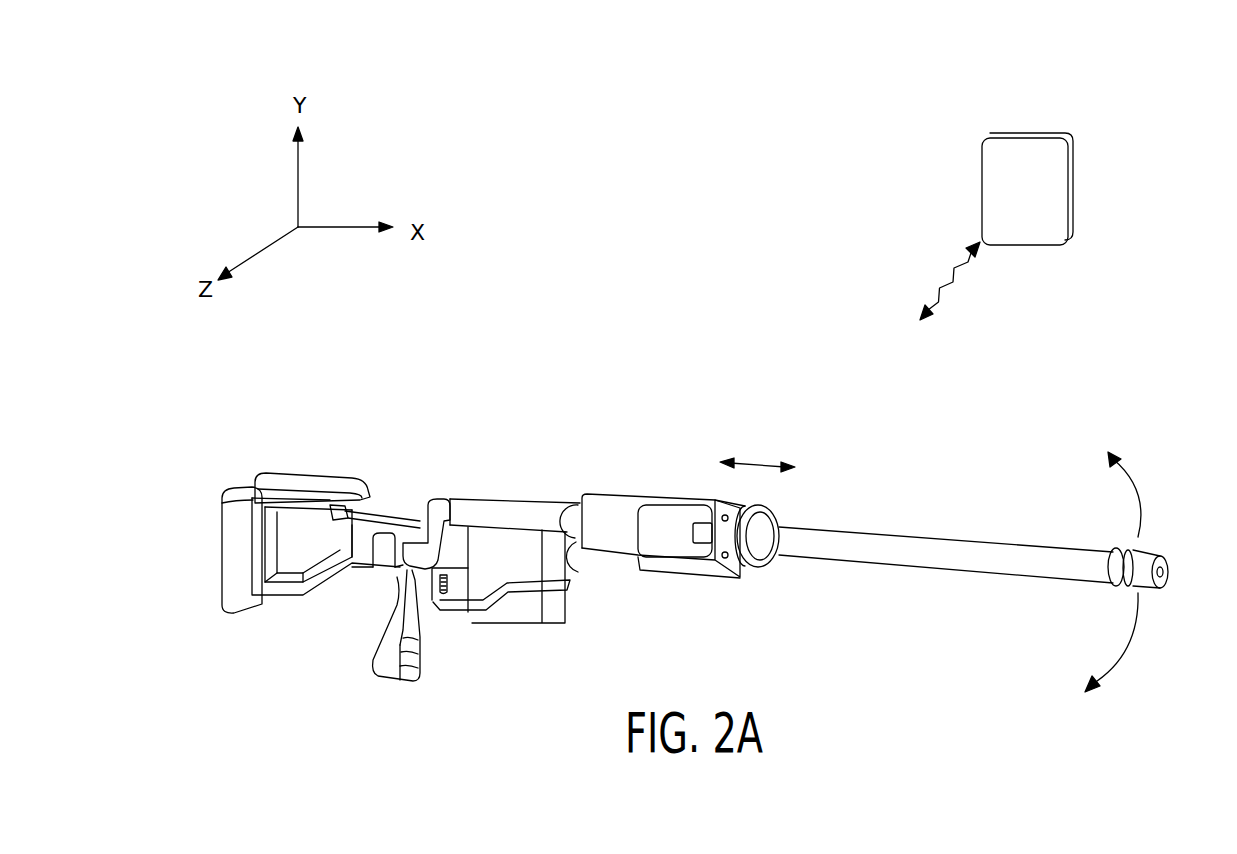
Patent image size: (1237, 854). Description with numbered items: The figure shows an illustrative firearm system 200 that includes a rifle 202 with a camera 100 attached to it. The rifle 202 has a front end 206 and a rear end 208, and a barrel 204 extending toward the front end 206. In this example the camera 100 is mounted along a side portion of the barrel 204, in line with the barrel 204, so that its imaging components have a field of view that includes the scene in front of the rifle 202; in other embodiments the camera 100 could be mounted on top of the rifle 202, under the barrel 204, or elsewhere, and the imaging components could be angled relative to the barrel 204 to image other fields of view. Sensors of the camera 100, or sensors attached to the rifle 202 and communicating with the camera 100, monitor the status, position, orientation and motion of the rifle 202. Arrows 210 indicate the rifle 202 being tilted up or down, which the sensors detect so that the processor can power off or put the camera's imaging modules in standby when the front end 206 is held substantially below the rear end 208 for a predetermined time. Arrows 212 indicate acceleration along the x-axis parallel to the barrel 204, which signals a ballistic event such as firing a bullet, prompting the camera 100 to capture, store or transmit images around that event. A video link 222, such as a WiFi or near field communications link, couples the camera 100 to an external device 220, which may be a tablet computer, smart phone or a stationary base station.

The camera 100 is at (618, 510).
The firearm system 200 is at (712, 312).
The rifle 202 is at (478, 508).
The barrel 204 is at (986, 566).
The front end 206 is at (1168, 574).
The rear end 208 is at (222, 548).
The arrows 210 is at (1137, 497).
The arrows 212 is at (757, 462).
The device 220 is at (1033, 133).
The video link 222 is at (960, 278).